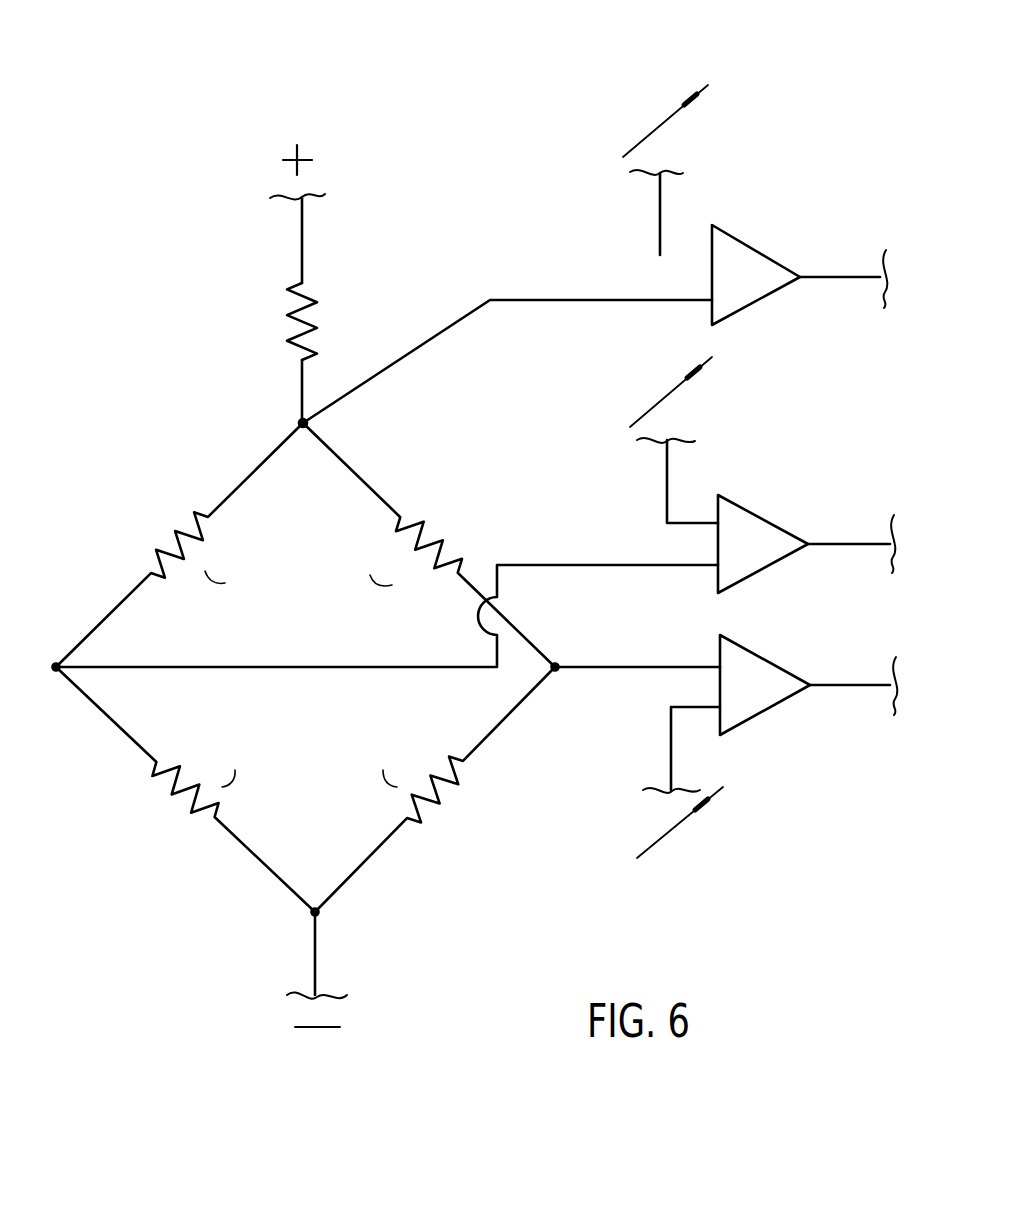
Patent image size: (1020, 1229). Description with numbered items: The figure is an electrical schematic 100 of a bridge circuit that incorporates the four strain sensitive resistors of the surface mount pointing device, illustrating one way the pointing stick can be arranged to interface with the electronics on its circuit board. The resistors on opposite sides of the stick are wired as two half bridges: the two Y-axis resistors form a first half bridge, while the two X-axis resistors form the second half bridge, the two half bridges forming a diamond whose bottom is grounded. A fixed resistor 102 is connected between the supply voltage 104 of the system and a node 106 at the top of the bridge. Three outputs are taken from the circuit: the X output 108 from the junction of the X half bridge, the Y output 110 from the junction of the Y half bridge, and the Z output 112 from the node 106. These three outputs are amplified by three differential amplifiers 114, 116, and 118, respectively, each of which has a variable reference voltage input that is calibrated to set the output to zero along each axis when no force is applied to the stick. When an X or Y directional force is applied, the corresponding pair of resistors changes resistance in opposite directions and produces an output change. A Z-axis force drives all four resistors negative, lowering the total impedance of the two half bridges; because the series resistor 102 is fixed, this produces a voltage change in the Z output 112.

The electrical schematic 100 is at (523, 95).
The fixed resistor 102 is at (285, 324).
The supply voltage 104 is at (272, 183).
The node 106 is at (300, 422).
The X OUT output 108 is at (607, 670).
The Y OUT output 110 is at (565, 563).
The Z OUT output 112 is at (557, 303).
The differential amplifier 114 is at (780, 690).
The differential amplifier 116 is at (780, 550).
The differential amplifier 118 is at (765, 285).